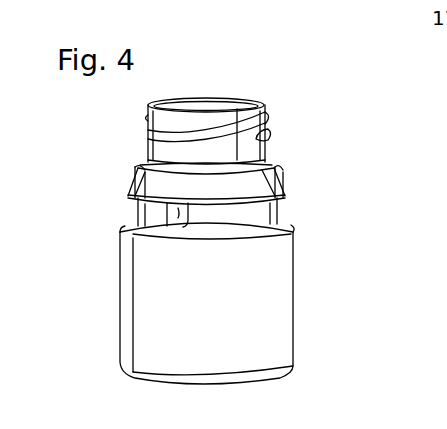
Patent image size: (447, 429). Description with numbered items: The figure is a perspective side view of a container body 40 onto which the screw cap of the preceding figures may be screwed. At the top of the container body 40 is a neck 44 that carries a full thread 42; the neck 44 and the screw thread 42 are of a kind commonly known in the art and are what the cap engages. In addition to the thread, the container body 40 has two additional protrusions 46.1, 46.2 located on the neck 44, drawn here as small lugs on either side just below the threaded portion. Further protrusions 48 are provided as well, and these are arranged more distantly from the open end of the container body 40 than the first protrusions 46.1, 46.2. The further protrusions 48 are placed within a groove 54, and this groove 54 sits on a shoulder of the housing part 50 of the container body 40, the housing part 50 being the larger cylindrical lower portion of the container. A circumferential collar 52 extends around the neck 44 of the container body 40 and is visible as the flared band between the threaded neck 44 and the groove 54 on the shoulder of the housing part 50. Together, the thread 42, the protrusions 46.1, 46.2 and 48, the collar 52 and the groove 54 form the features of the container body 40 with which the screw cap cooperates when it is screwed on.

The container body 40 is at (255, 68).
The full thread 42 is at (268, 112).
The neck 44 is at (172, 151).
The additional protrusion 46.1 is at (272, 168).
The additional protrusion 46.2 is at (140, 176).
The further protrusions 48 is at (178, 218).
The housing part 50 is at (285, 281).
The circumferential collar 52 is at (285, 190).
The groove 54 is at (293, 230).